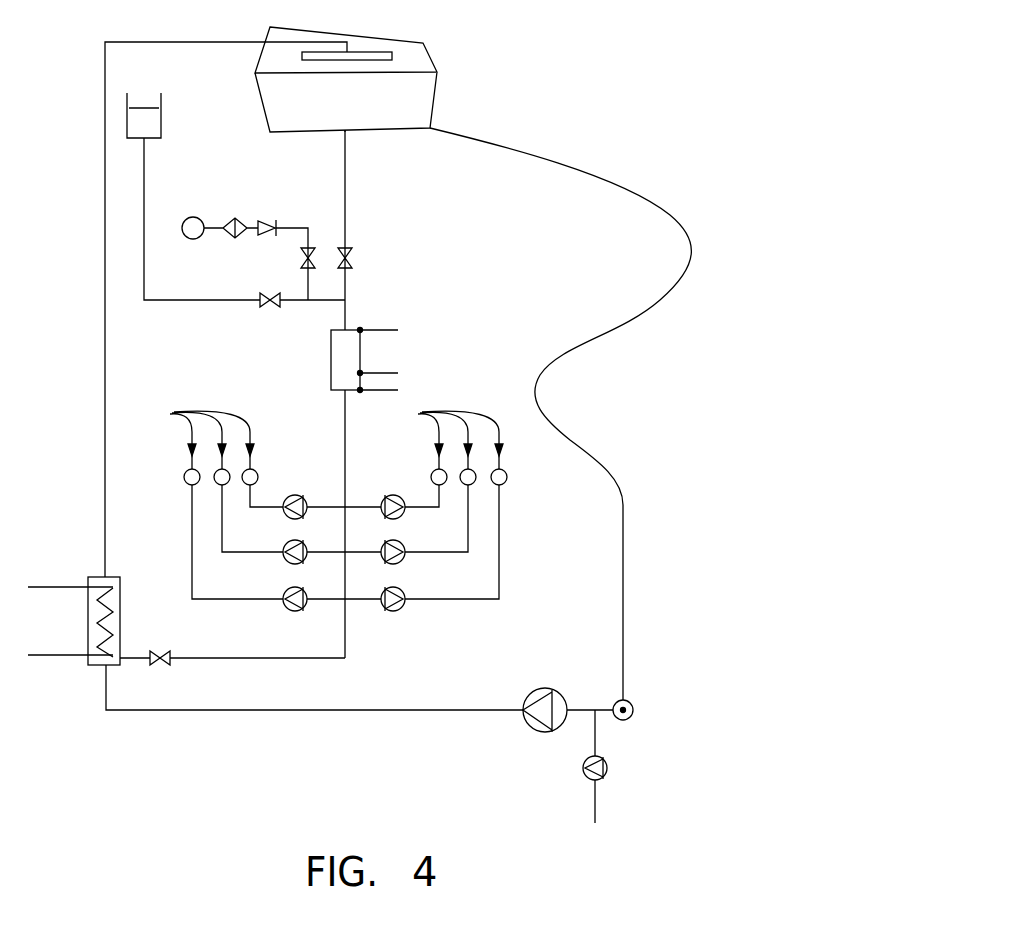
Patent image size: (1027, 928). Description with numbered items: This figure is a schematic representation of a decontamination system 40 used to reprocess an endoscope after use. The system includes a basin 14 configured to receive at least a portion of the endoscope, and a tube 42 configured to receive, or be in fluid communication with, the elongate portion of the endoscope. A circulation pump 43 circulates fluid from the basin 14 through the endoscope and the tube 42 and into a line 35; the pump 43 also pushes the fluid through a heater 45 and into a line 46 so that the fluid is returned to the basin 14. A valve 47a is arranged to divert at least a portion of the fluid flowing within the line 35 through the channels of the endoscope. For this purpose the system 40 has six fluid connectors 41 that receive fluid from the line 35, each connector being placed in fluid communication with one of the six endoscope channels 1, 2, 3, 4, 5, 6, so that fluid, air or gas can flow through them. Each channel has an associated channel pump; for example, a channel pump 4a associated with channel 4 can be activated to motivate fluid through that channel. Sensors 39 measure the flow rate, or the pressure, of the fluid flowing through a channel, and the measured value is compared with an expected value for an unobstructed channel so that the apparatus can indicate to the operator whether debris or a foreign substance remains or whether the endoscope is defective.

The basin 14 is at (437, 80).
The decontamination system 40 is at (637, 65).
The line 46 is at (105, 203).
The tube 42 is at (567, 440).
The fluid connectors 41 is at (324, 440).
The sensor 39 is at (184, 476).
The channel 1 is at (268, 505).
The channel 2 is at (280, 548).
The channel 3 is at (282, 597).
The channel 4 is at (410, 596).
The channel 5 is at (412, 548).
The channel 6 is at (420, 500).
The channel pump 4a is at (400, 611).
The heater 45 is at (93, 665).
The valve 47a is at (165, 665).
The line 35 is at (388, 712).
The circulation pump 43 is at (530, 728).